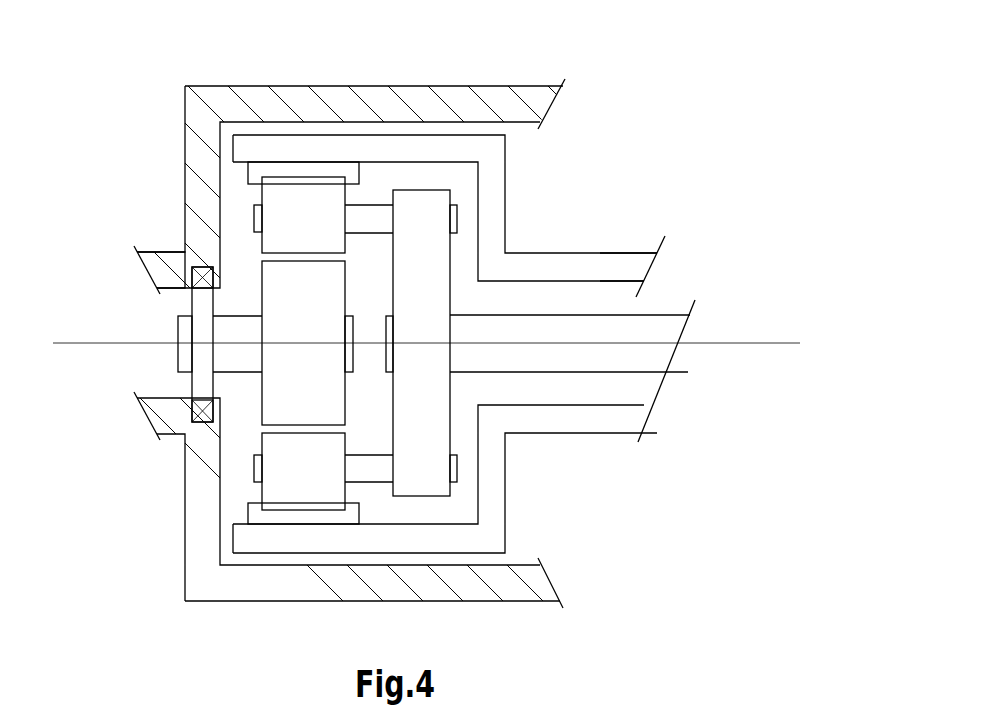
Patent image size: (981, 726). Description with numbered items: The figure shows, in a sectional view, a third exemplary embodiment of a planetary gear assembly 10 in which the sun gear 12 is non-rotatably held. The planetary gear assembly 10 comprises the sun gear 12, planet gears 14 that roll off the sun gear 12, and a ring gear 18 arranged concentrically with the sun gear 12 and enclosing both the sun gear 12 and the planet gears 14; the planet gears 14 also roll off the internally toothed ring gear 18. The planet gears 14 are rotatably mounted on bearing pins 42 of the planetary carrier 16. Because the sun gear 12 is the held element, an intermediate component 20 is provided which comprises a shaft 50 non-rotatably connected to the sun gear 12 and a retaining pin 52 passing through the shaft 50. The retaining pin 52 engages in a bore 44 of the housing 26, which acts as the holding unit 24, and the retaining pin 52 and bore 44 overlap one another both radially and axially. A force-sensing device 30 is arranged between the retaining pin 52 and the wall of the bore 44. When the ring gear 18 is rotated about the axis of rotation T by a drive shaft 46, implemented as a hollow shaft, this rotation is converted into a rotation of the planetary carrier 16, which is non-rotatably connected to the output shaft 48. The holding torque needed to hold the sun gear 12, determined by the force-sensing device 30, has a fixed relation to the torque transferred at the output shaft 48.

The planetary gear assembly 10 is at (108, 92).
The sun gear 12 is at (290, 338).
The planet gears 14 is at (281, 233).
The planetary carrier 16 is at (403, 308).
The ring gear 18 is at (497, 190).
The intermediate component 20 is at (151, 352).
The holding unit 24 is at (490, 363).
The housing 26 is at (290, 107).
The force-sensing device 30 is at (188, 270).
The bearing pin 42 is at (358, 222).
The bore 44 is at (188, 253).
The drive shaft 46 is at (637, 260).
The output shaft 48 is at (663, 358).
The shaft 50 is at (177, 355).
The retaining pin 52 is at (205, 383).
The axis of rotation T is at (67, 340).